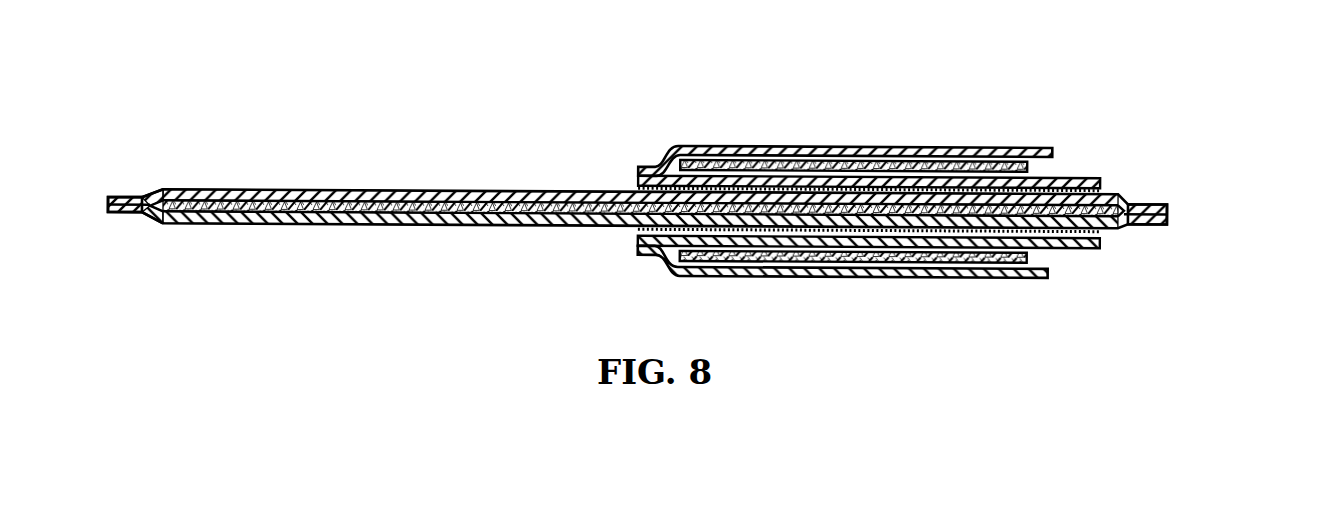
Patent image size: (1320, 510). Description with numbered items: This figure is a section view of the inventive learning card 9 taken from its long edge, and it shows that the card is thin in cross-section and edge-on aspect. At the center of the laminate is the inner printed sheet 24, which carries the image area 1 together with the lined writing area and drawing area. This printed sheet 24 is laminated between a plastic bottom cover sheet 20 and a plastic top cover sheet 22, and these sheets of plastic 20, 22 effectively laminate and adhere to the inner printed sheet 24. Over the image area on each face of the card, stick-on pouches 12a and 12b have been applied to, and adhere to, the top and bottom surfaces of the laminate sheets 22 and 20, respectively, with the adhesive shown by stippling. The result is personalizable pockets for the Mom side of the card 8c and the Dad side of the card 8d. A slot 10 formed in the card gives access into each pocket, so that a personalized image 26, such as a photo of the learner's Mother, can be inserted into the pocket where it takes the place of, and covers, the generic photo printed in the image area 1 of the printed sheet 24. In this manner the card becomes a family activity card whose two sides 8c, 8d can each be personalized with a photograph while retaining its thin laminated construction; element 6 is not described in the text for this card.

The image area 1 is at (1053, 87).
The card 9 is at (243, 167).
The Mom side of the card 8c is at (396, 185).
The Dad side of the card 8d is at (360, 233).
The printed sheet 24 is at (542, 200).
The top cover sheet 22 is at (142, 197).
The bottom cover sheet 20 is at (144, 215).
The tip section 6 is at (108, 210).
The stick-on pouch 12a is at (808, 145).
The stick-on pouch 12b is at (858, 270).
The slot 10 is at (1072, 162).
The personalized image 26 is at (1028, 162).